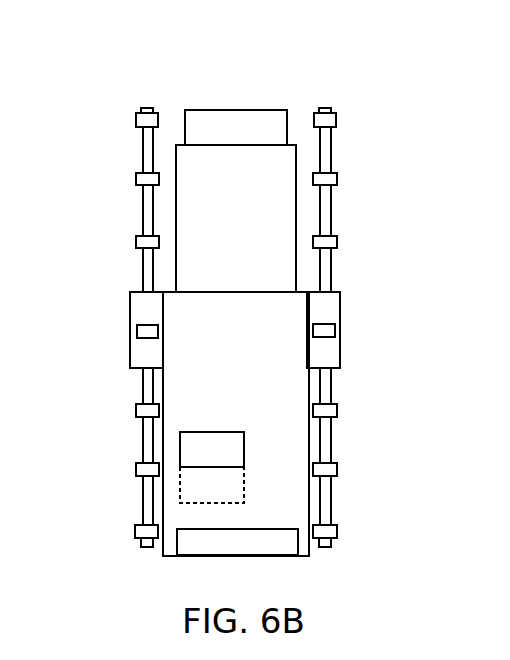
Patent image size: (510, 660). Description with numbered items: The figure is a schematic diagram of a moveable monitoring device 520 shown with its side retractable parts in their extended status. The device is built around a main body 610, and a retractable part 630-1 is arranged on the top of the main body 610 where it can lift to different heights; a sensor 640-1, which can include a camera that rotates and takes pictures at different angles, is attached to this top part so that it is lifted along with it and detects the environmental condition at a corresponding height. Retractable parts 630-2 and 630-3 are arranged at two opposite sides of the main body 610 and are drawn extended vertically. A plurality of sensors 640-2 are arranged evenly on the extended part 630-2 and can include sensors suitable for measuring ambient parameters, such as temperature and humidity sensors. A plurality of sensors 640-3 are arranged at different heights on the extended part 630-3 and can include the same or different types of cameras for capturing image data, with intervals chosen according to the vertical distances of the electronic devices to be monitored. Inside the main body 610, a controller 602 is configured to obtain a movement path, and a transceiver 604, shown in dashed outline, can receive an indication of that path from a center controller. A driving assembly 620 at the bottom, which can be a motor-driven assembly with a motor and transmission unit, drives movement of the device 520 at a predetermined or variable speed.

The moveable monitoring device 520 is at (116, 56).
The main body 610 is at (250, 320).
The sensor 640-1 is at (233, 110).
The retractable part 630-1 is at (296, 145).
The retractable part 630-2 is at (130, 320).
The retractable part 630-3 is at (340, 318).
The sensors 640-2 is at (134, 121).
The sensors 640-3 is at (337, 116).
The controller 602 is at (244, 446).
The transceiver 604 is at (244, 481).
The driving assembly 620 is at (240, 529).